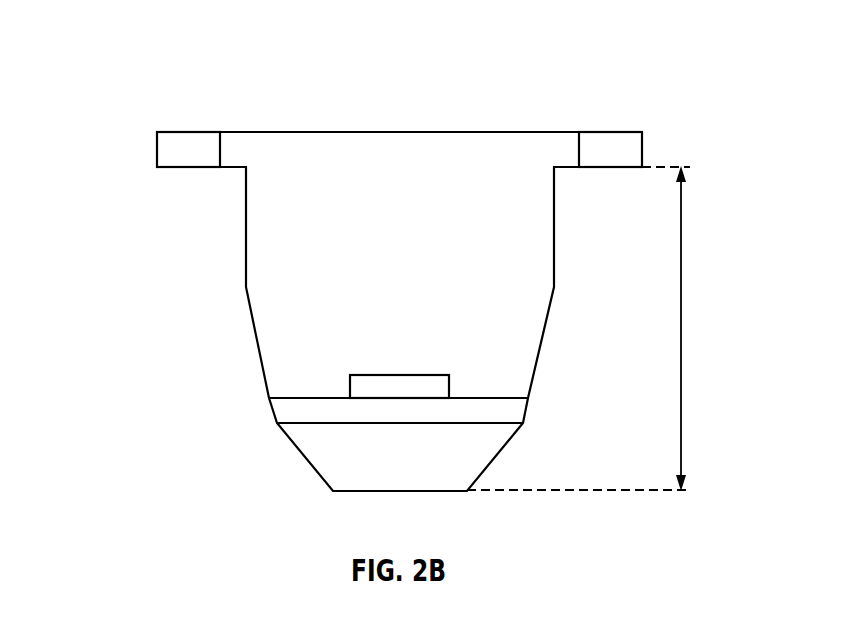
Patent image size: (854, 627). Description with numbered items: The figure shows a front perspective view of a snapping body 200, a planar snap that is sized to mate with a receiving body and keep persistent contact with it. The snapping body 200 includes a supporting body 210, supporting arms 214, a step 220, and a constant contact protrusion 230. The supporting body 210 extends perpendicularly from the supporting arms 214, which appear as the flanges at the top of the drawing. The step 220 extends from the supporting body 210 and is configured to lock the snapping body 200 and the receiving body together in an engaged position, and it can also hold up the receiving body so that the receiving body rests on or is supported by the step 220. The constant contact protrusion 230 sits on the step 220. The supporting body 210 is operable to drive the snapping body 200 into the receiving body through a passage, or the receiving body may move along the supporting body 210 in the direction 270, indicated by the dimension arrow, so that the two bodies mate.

The snapping body 200 is at (112, 54).
The supporting body 210 is at (246, 202).
The supporting arms 214 is at (189, 131).
The step 220 is at (522, 412).
The constant contact protrusion 230 is at (392, 383).
The direction 270 is at (681, 330).